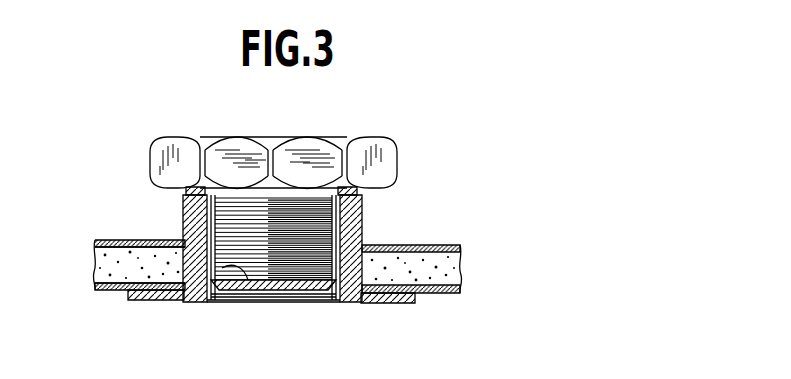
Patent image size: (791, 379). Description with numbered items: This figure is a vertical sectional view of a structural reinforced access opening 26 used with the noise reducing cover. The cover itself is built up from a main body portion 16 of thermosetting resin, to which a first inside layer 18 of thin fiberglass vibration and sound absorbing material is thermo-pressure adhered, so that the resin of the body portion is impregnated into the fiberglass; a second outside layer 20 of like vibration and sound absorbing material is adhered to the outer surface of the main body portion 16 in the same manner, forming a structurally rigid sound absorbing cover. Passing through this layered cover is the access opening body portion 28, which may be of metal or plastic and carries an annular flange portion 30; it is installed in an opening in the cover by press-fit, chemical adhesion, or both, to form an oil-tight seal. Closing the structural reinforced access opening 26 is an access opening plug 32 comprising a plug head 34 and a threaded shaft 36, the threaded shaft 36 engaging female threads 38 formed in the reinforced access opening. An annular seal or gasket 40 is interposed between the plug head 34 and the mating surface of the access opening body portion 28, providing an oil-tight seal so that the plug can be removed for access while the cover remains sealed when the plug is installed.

The main body portion 16 is at (123, 250).
The first inside layer 18 is at (111, 291).
The second outside layer 20 is at (437, 245).
The structural reinforced access opening 26 is at (368, 221).
The access opening body portion 28 is at (193, 292).
The annular flange portion 30 is at (403, 303).
The access opening plug 32 is at (318, 150).
The plug head 34 is at (388, 163).
The threaded shaft 36 is at (310, 265).
The female threads 38 is at (224, 270).
The annular seal or gasket 40 is at (188, 190).